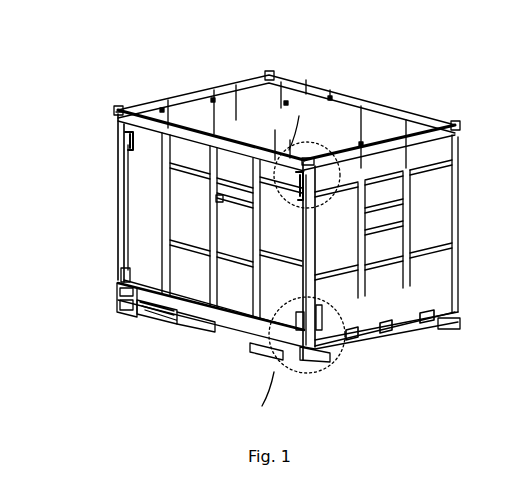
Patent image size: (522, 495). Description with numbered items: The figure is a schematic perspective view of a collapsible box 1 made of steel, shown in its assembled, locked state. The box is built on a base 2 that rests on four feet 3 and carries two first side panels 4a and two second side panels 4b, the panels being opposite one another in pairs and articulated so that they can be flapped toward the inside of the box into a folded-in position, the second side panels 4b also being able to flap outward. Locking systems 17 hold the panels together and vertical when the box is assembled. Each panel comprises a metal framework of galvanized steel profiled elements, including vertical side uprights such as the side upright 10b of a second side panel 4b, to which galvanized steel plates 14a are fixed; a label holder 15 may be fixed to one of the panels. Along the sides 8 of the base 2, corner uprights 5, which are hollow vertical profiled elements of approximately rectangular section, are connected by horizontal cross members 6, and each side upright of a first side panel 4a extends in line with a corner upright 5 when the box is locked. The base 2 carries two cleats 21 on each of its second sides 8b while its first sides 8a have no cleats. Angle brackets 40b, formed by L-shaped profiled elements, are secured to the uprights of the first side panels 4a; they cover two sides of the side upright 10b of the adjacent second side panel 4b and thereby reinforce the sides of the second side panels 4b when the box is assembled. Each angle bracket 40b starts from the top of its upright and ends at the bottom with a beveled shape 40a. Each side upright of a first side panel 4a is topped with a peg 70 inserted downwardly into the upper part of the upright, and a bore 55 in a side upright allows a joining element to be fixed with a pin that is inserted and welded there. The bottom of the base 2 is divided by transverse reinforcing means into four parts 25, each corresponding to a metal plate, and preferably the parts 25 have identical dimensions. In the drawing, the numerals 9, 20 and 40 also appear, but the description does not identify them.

The collapsible box 1 is at (337, 62).
The base 2 is at (285, 338).
The feet 3 is at (127, 310).
The first side panels 4a is at (190, 150).
The second side panels 4b is at (205, 97).
The corner upright 5 is at (120, 292).
The horizontal cross members 6 is at (165, 312).
The sides of the base 8 is at (306, 342).
The first sides 8a is at (238, 330).
The second sides 8b is at (330, 347).
The corner block 9 is at (122, 296).
The side upright 10b is at (313, 230).
The plates 14a is at (182, 230).
The label holder 15 is at (218, 199).
The locking systems 17 is at (128, 150).
The post cap 20 is at (309, 158).
The cleats 21 is at (352, 340).
The parts 25 is at (116, 118).
The vertical post 40 is at (354, 249).
The beveled shape 40a is at (298, 316).
The angle brackets 40b is at (118, 196).
The bore 55 is at (120, 276).
The peg 70 is at (118, 108).